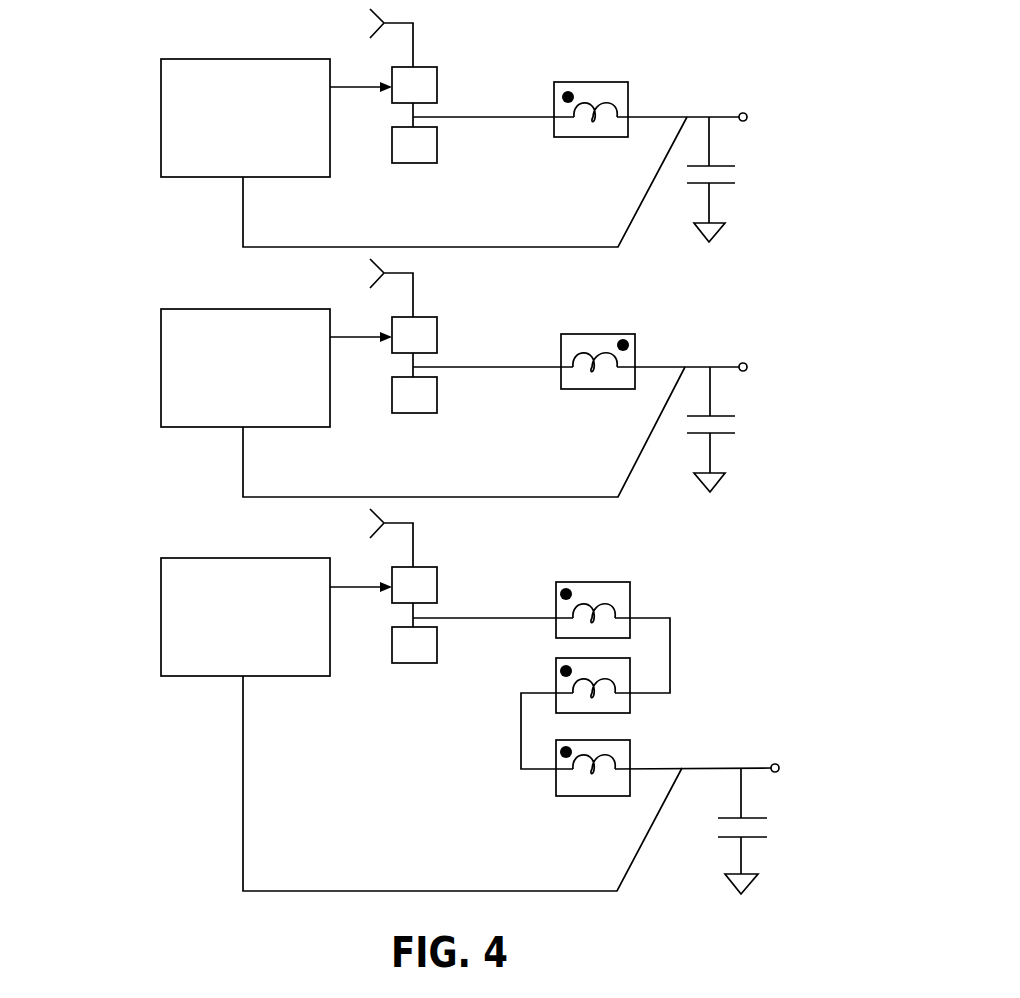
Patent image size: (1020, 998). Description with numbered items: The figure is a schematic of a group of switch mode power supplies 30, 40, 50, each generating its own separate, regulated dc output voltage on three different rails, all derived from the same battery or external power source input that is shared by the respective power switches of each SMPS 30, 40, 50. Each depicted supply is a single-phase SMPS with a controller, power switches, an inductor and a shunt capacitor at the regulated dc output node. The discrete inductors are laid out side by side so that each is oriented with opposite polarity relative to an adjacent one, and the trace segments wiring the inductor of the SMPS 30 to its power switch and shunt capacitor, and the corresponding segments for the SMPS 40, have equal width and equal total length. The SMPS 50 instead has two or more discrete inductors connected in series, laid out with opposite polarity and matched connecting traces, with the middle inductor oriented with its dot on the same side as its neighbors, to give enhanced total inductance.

The switch mode power supply 30 is at (146, 108).
The switch mode power supply 40 is at (146, 371).
The switch mode power supply 50 is at (146, 614).